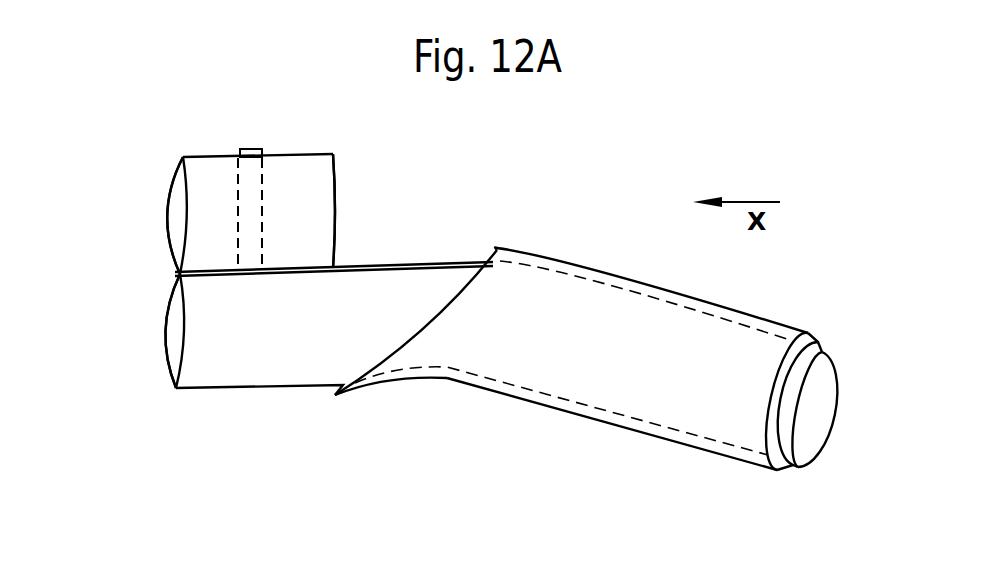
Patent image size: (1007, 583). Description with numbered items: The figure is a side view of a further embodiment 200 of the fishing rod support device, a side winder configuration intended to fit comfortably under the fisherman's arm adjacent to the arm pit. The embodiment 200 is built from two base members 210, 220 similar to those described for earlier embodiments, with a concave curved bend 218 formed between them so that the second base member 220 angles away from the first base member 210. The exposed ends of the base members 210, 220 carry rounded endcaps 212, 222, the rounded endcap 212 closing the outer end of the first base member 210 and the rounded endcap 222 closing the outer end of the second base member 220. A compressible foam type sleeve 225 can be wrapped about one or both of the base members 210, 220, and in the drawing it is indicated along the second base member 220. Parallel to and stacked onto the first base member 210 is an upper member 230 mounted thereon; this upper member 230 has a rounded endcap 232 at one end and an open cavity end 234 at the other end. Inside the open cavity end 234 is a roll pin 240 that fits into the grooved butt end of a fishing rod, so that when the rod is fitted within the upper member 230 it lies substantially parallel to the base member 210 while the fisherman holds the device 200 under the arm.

The fishing rod support device embodiment 200 is at (161, 39).
The base member 210 is at (231, 379).
The rounded endcap 212 is at (106, 337).
The concave curved bend 218 is at (451, 364).
The base member 220 is at (627, 386).
The rounded endcap 222 is at (843, 422).
The compressible foam type sleeve 225 is at (572, 400).
The upper member 230 is at (330, 187).
The rounded endcap 232 is at (120, 212).
The open cavity end 234 is at (392, 204).
The roll pin 240 is at (188, 186).